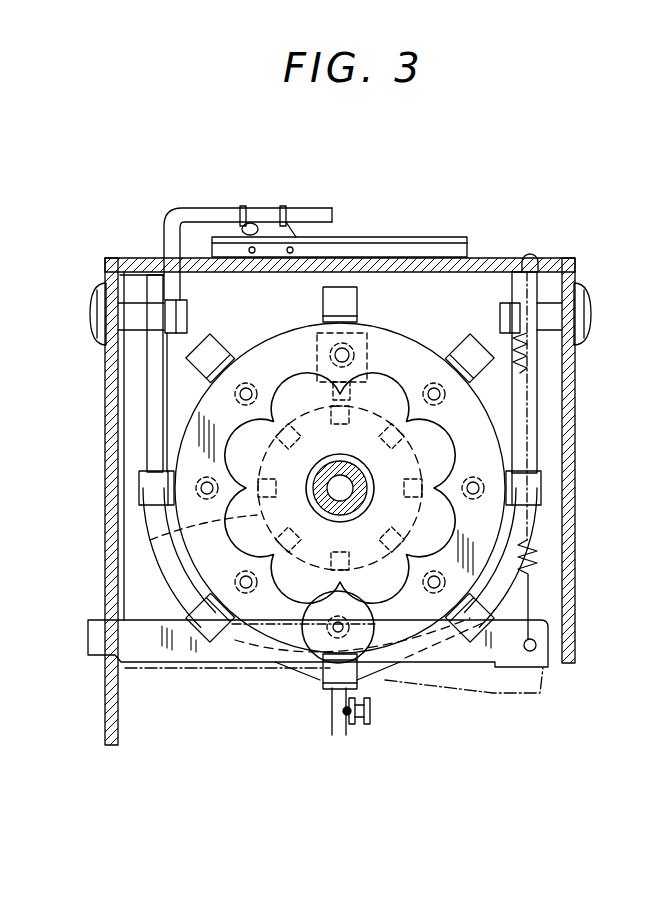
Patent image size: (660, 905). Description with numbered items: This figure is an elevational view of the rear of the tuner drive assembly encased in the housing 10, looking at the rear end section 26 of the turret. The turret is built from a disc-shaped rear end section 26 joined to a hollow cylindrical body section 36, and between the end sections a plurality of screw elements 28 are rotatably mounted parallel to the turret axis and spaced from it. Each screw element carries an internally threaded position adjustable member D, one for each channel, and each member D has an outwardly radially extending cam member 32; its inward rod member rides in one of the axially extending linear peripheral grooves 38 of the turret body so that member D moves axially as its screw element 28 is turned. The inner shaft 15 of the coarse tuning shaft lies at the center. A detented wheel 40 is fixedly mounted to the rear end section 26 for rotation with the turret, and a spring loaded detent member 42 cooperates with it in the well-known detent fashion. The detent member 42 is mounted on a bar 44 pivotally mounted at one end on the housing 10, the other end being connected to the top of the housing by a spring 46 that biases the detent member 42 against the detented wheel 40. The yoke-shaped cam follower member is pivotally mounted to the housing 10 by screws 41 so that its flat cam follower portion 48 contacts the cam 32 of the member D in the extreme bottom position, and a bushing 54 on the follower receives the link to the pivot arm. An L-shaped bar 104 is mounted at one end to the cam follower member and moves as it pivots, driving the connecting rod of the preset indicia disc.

The housing 10 is at (108, 458).
The L-shaped bar 104 is at (213, 210).
The screws 41 is at (100, 303).
The rear end section 26 is at (577, 370).
The screw elements 28 is at (248, 387).
The detented wheel 40 is at (443, 448).
The inner shaft 15 is at (340, 488).
The peripheral grooves 38 is at (340, 488).
The cam member 32 is at (358, 296).
The position adjustable members D is at (223, 347).
The cylindrical body section 36 is at (160, 538).
The detent member 42 is at (303, 612).
The bar 44 is at (443, 650).
The spring 46 is at (536, 553).
The cam follower portion 48 is at (496, 587).
The bushing 54 is at (370, 727).